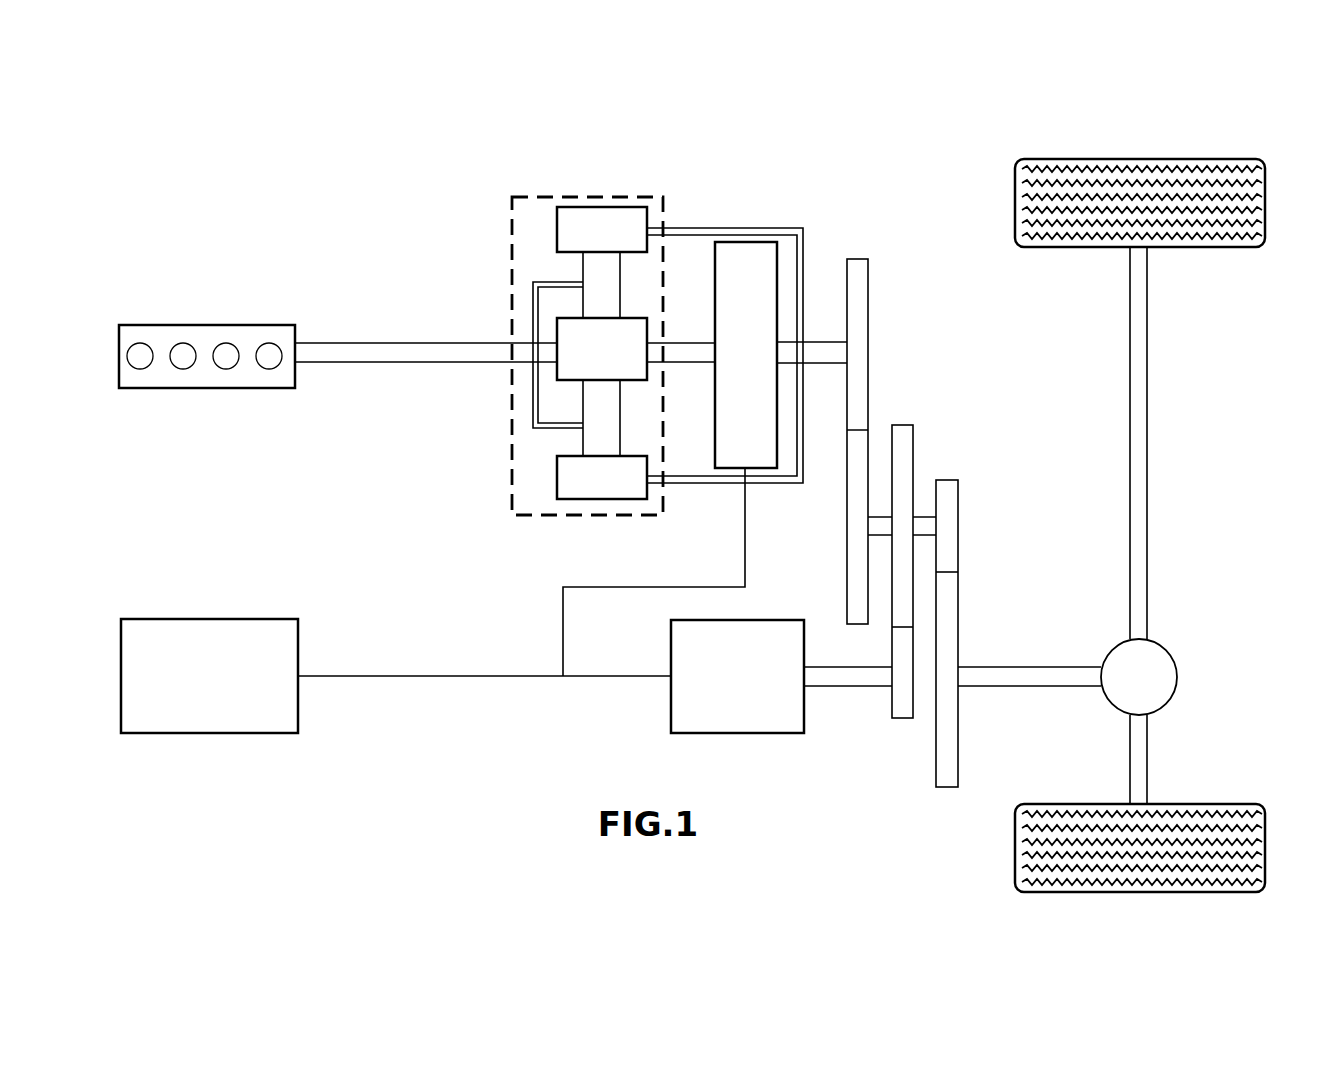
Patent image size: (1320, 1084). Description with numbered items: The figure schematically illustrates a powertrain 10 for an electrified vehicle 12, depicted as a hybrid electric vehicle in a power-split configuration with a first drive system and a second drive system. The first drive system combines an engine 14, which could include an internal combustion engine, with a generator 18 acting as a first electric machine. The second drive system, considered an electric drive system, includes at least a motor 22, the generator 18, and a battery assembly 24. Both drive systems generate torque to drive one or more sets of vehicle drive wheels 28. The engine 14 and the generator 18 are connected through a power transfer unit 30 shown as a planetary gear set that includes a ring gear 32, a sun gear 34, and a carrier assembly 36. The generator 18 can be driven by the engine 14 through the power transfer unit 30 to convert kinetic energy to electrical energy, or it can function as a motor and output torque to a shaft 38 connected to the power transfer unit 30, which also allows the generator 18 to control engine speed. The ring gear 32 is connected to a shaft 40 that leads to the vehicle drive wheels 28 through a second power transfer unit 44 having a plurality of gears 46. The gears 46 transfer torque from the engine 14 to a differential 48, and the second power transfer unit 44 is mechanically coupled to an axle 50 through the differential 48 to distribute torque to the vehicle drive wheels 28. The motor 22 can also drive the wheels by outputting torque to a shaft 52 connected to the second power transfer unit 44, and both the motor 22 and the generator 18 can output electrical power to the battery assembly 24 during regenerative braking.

The powertrain 10 is at (352, 225).
The electrified vehicle 12 is at (773, 152).
The engine 14 is at (133, 325).
The generator 18 is at (721, 243).
The motor 22 is at (804, 715).
The battery assembly 24 is at (138, 619).
The vehicle drive wheels 28 is at (1128, 159).
The power transfer unit 30 is at (512, 471).
The ring gear 32 is at (557, 229).
The sun gear 34 is at (557, 326).
The carrier assembly 36 is at (532, 412).
The shaft 38 is at (675, 342).
The shaft 40 is at (828, 342).
The second power transfer unit 44 is at (942, 388).
The gears 46 is at (868, 395).
The differential 48 is at (1170, 698).
The axle 50 is at (1148, 432).
The shaft 52 is at (860, 686).